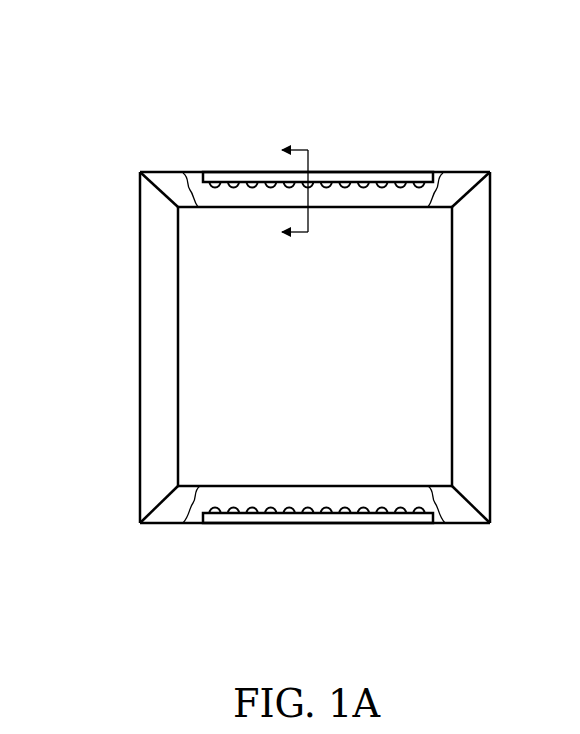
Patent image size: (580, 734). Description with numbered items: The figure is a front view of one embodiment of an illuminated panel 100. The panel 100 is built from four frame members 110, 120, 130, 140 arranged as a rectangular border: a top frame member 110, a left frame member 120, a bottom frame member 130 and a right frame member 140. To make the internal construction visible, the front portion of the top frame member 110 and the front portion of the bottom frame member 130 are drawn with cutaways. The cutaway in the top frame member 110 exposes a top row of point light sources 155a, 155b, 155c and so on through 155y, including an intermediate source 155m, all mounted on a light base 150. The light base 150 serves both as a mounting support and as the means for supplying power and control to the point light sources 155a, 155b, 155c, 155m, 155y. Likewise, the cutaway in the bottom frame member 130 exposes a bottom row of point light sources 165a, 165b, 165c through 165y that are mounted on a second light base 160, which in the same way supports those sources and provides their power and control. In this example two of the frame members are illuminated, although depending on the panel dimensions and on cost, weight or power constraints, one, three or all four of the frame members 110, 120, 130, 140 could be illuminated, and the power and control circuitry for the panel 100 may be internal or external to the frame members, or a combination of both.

The illuminated panel 100 is at (162, 58).
The top frame member 110 is at (465, 172).
The frame member 120 is at (140, 358).
The bottom frame member 130 is at (160, 523).
The frame member 140 is at (490, 350).
The light base 150 is at (372, 188).
The point light source 155a is at (212, 172).
The point light source 155b is at (233, 172).
The point light source 155c is at (247, 172).
The point light source 155m is at (313, 172).
The point light source 155y is at (421, 172).
The light base 160 is at (355, 508).
The point light source 165a is at (212, 523).
The point light source 165b is at (233, 523).
The point light source 165c is at (250, 523).
The point light source 165y is at (418, 523).